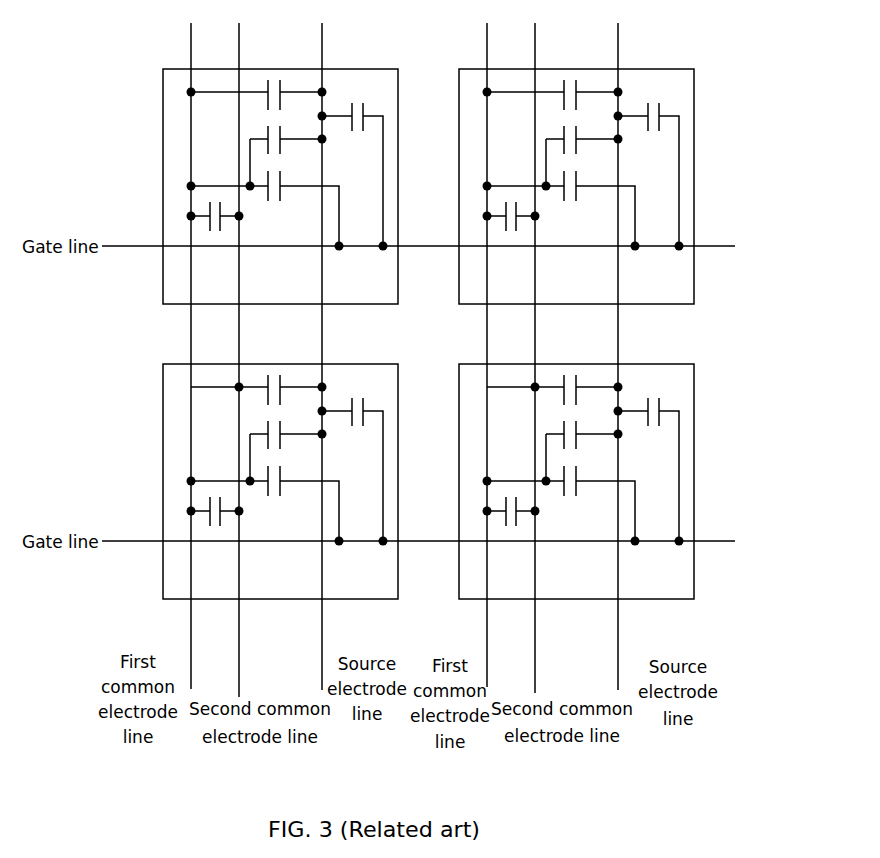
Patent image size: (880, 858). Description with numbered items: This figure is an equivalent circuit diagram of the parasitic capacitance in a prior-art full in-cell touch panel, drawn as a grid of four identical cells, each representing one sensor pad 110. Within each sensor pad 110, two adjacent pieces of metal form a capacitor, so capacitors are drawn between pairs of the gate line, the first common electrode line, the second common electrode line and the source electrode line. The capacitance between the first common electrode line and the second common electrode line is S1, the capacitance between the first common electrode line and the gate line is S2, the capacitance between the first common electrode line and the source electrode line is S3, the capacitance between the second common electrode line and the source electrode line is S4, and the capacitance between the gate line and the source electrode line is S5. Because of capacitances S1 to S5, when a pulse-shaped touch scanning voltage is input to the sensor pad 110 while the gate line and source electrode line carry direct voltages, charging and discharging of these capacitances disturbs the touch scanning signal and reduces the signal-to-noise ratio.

The sensor pad 110 is at (348, 69).
The capacitance between the first common electrode line and the second common electr S1 is at (363, 392).
The capacitance between the first common electrode line and the gate line S2 is at (413, 358).
The capacitance between the first common electrode line and the source electrode lin S3 is at (434, 301).
The capacitance between the second common electrode line and the source electrode li S4 is at (405, 239).
The capacitance between the gate line and the source electrode line S5 is at (501, 312).